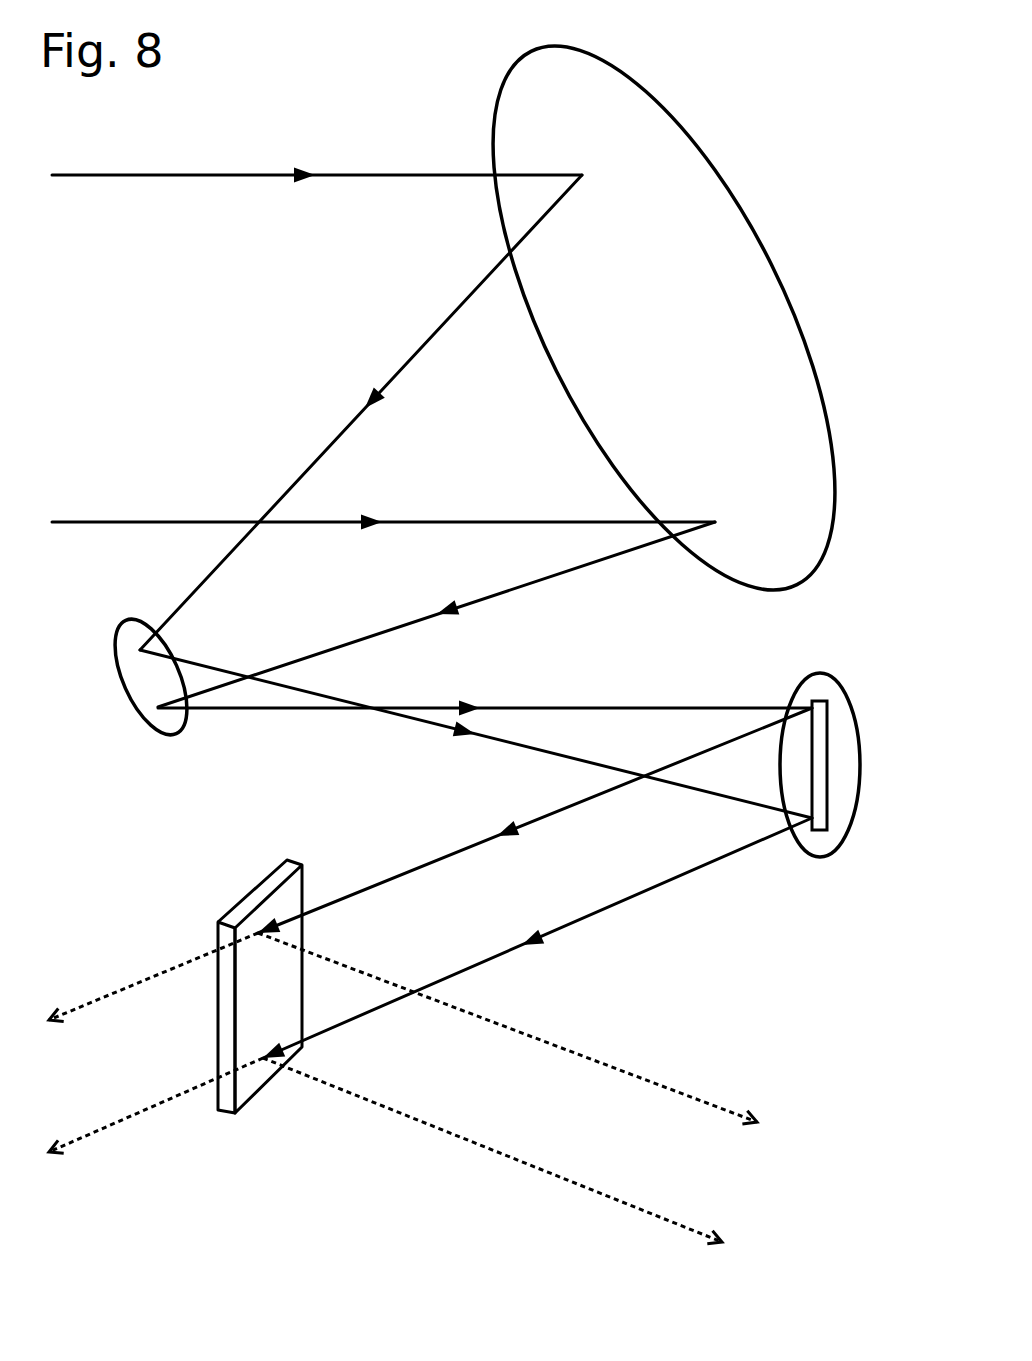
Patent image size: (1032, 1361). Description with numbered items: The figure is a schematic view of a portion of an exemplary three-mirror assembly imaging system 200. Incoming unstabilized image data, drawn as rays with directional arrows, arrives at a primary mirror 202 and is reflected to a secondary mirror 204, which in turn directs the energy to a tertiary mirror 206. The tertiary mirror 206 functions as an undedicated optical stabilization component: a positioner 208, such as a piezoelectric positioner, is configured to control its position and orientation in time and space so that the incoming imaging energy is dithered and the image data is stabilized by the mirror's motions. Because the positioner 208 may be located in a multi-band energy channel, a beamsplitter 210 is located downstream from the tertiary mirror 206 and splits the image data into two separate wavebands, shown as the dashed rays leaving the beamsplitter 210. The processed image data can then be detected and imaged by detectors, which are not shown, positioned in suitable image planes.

The three-mirror assembly imaging system 200 is at (893, 68).
The primary mirror 202 is at (733, 192).
The secondary mirror 204 is at (120, 683).
The tertiary mirror 206 is at (828, 692).
The positioner 208 is at (828, 747).
The beamsplitter 210 is at (255, 1097).